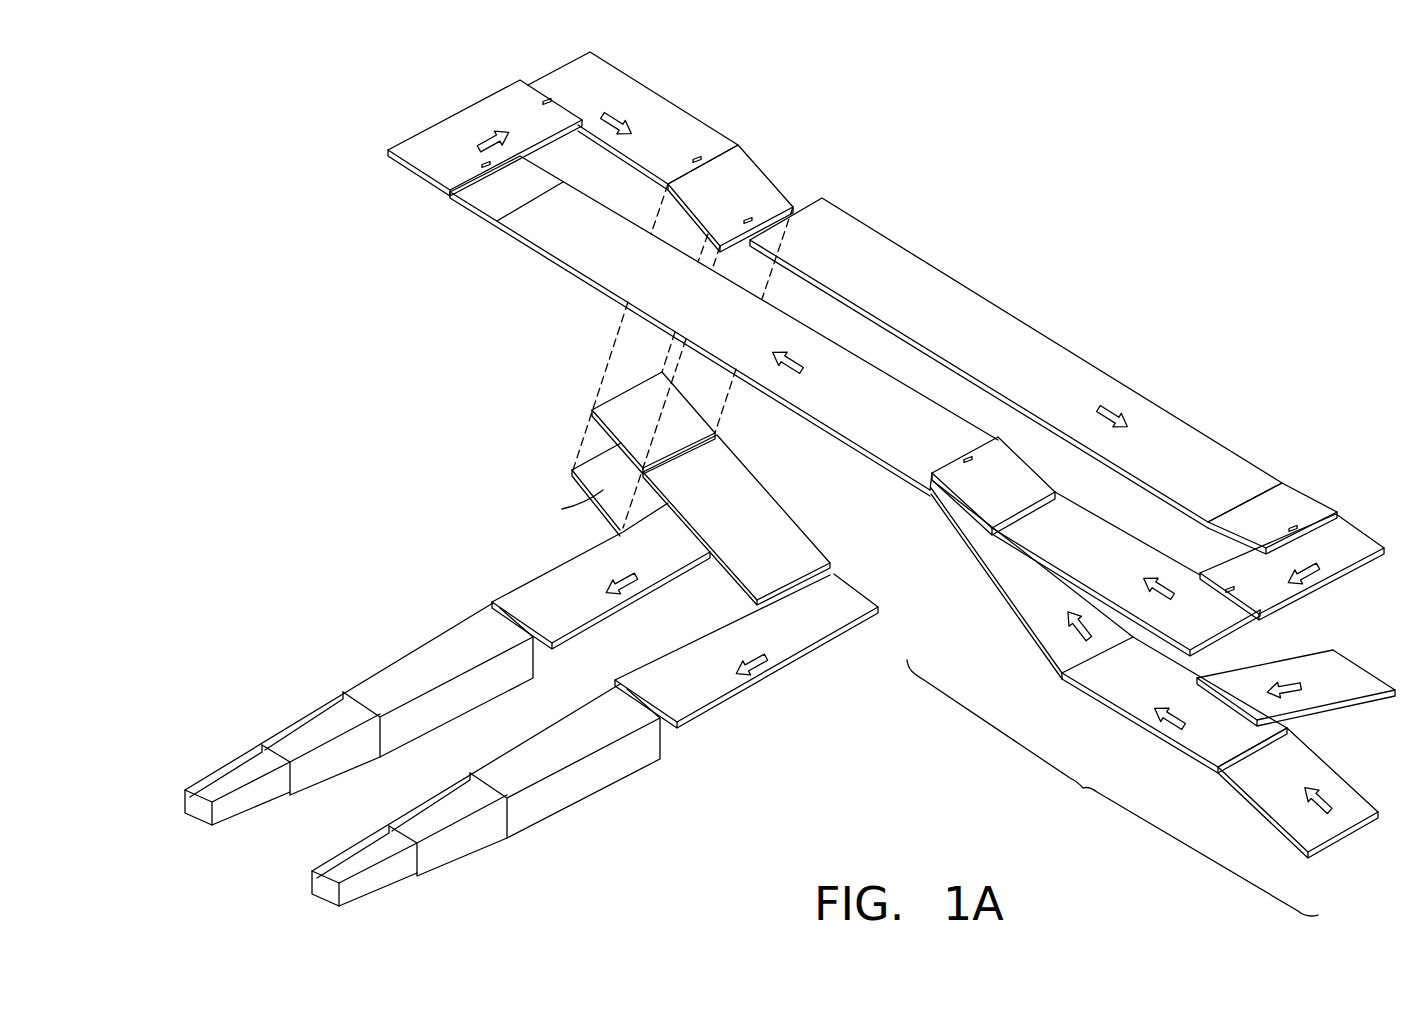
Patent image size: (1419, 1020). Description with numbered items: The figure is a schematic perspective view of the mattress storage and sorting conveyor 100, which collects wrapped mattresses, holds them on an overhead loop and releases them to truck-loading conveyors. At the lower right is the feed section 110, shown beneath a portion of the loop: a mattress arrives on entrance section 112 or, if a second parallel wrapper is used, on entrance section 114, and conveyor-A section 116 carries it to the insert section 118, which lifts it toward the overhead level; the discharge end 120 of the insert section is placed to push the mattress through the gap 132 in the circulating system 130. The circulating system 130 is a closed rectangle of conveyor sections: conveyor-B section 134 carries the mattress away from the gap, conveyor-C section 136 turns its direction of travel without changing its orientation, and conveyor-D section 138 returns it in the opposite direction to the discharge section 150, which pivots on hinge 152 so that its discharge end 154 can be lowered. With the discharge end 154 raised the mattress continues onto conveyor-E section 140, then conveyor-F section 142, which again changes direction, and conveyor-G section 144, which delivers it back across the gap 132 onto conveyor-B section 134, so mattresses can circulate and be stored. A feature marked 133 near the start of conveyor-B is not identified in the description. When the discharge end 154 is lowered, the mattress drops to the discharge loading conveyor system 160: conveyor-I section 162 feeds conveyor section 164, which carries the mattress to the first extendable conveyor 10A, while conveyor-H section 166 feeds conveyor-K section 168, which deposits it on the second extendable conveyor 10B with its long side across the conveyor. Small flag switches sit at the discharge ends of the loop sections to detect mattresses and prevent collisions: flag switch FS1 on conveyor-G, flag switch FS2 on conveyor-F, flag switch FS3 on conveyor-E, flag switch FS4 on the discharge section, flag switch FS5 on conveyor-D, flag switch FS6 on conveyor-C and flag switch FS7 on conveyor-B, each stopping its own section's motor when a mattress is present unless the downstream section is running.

The mattress storage and sorting conveyor 100 is at (1043, 341).
The feed section 110 is at (1076, 790).
The entrance section 112 is at (1310, 765).
The entrance section 114 is at (1310, 662).
The conveyor-A section 116 is at (1127, 699).
The insert section 118 is at (1027, 612).
The discharge end 120 is at (933, 486).
The circulating system 130 is at (1072, 338).
The gap 132 is at (929, 471).
The transfer section 133 is at (531, 156).
The conveyor-B section 134 is at (553, 245).
The conveyor-C section 136 is at (428, 128).
The conveyor-D section 138 is at (618, 74).
The conveyor-E section 140 is at (933, 275).
The conveyor-F section 142 is at (1376, 538).
The conveyor-G section 144 is at (1087, 530).
The discharge section 150 is at (691, 322).
The hinge 152 is at (742, 152).
The discharge end 154 is at (761, 292).
The discharge loading conveyor system 160 is at (569, 474).
The conveyor-I section 162 is at (613, 523).
The conveyor section 164 is at (538, 587).
The conveyor-H section 166 is at (747, 512).
The conveyor-K section 168 is at (713, 688).
The first extendable conveyor 10A is at (346, 652).
The second extendable conveyor 10B is at (598, 822).
The flag switch FS1 is at (967, 455).
The flag switch FS2 is at (1230, 591).
The flag switch FS3 is at (1290, 527).
The flag switch FS4 is at (750, 217).
The flag switch FS5 is at (697, 155).
The flag switch FS6 is at (547, 97).
The flag switch FS7 is at (482, 163).